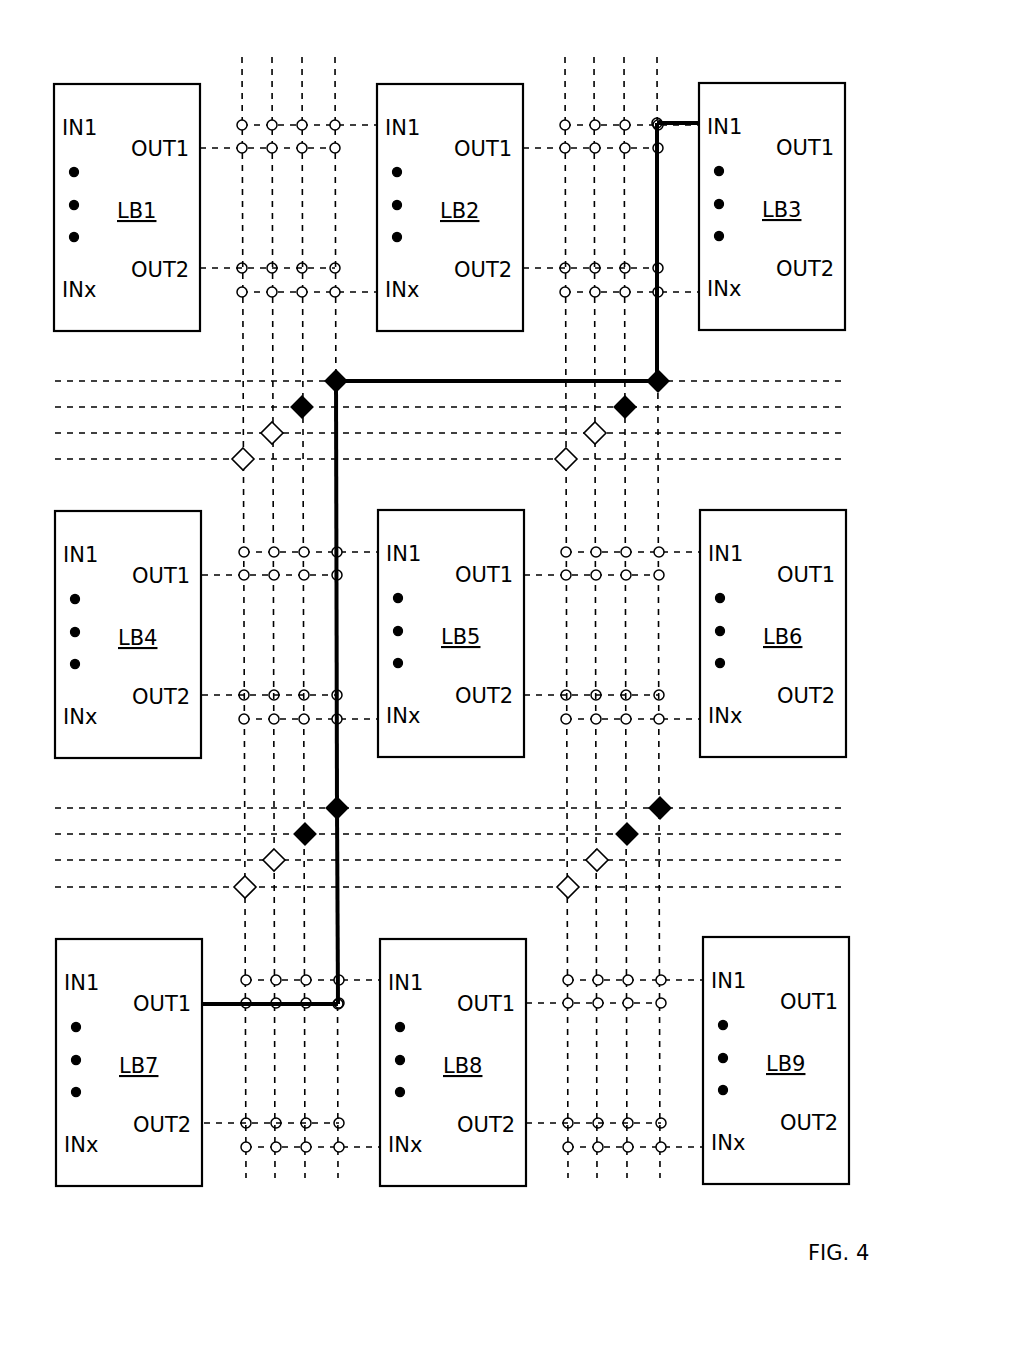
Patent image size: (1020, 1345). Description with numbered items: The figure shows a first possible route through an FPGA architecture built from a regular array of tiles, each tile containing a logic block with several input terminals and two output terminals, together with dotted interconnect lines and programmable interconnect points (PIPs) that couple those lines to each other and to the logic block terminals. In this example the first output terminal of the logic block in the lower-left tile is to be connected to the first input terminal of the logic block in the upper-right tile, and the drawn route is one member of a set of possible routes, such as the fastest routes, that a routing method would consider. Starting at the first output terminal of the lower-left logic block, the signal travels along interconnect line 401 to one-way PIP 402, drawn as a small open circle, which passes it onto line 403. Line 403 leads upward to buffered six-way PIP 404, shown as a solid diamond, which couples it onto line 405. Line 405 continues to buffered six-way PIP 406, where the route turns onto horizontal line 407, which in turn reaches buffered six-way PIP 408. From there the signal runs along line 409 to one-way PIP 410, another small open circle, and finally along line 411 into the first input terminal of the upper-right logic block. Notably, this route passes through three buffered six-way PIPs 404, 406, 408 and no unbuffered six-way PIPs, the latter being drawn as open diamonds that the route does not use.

The interconnect line 401 is at (227, 1000).
The one-way PIP 402 is at (341, 1007).
The interconnect line 403 is at (340, 927).
The buffered six-way PIP 404 is at (340, 800).
The interconnect line 405 is at (338, 503).
The buffered six-way PIP 406 is at (343, 373).
The interconnect line 407 is at (460, 378).
The buffered six-way PIP 408 is at (665, 372).
The interconnect line 409 is at (653, 198).
The one-way PIP 410 is at (657, 121).
The interconnect line 411 is at (675, 122).